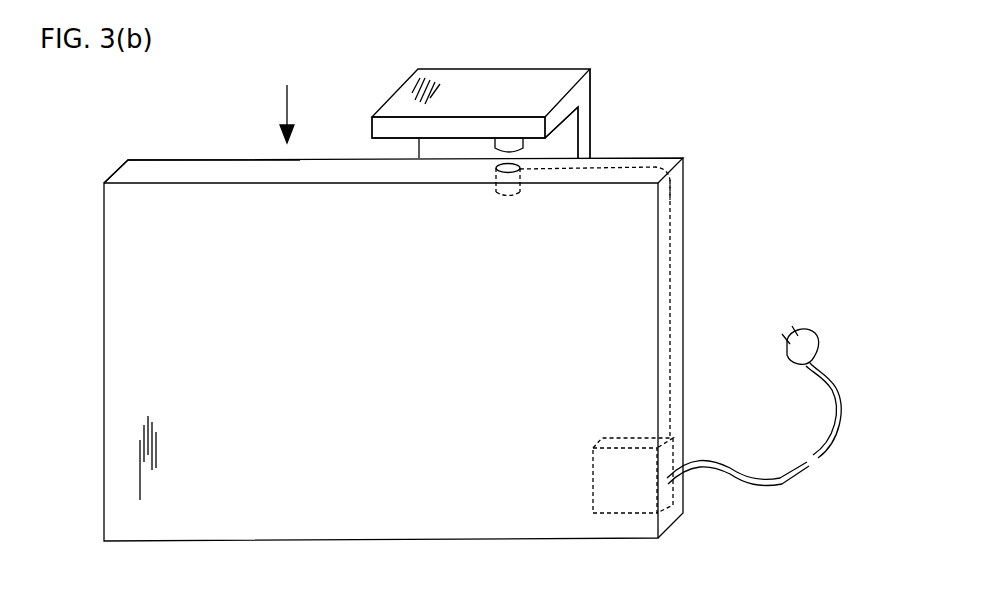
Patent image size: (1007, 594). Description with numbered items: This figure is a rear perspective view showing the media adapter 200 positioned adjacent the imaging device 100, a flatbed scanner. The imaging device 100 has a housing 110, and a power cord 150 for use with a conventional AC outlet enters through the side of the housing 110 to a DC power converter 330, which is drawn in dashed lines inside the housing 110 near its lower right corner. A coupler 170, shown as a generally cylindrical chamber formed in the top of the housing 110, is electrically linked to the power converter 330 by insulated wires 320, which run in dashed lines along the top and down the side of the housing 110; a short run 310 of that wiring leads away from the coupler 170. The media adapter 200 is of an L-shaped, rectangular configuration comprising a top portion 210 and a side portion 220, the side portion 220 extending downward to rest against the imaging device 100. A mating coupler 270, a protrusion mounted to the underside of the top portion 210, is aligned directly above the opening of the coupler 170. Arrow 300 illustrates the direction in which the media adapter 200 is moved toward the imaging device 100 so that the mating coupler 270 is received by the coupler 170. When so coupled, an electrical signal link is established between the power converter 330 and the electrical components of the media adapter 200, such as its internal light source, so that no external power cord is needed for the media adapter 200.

The imaging device 100 is at (700, 243).
The housing 110 is at (153, 163).
The power cord 150 is at (757, 483).
The coupler 170 is at (497, 172).
The media adapter 200 is at (608, 116).
The top portion 210 is at (372, 128).
The side portion 220 is at (592, 150).
The mating coupler 270 is at (497, 148).
The arrow 300 is at (287, 100).
The first cable portion 310 is at (522, 186).
The insulated wire 320 is at (668, 360).
The DC power converter 330 is at (593, 478).